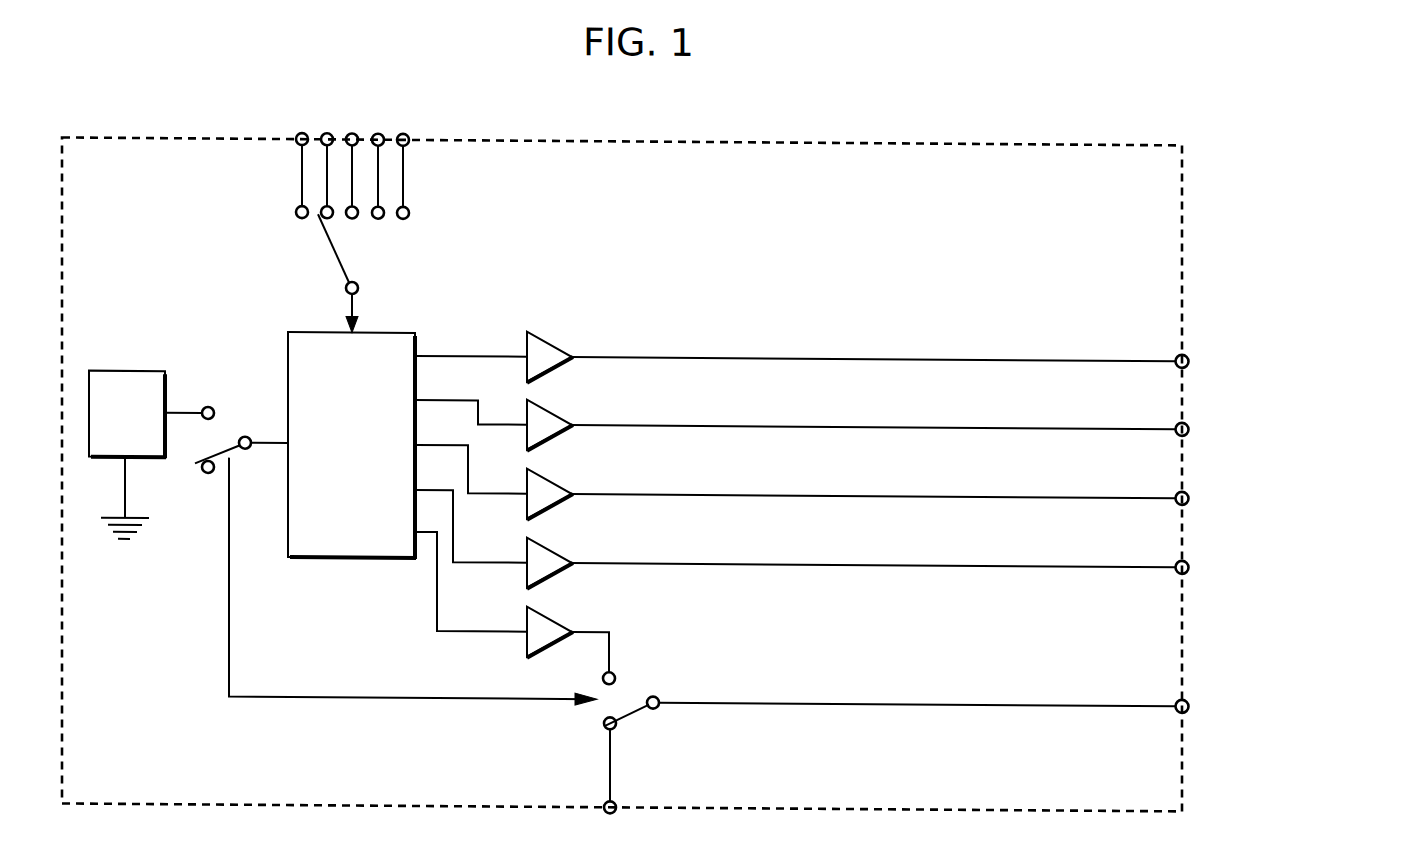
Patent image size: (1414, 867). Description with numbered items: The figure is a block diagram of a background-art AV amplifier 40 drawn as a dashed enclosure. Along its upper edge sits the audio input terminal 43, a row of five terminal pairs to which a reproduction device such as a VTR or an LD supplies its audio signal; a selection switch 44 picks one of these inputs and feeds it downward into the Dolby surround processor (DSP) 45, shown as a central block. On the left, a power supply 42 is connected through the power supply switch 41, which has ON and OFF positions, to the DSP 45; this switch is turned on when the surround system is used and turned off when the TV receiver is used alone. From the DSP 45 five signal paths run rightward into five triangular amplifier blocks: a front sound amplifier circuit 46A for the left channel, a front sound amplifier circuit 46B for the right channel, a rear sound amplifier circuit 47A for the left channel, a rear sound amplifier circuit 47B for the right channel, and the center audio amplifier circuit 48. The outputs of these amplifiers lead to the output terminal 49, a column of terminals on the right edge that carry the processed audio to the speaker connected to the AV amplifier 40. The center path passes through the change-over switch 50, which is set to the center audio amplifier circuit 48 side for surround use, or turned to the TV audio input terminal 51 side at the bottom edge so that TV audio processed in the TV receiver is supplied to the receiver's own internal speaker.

The AV amplifier 40 is at (1033, 135).
The power supply switch 41 is at (224, 420).
The power supply 42 is at (128, 368).
The audio input terminal 43 is at (410, 124).
The selection switch 44 is at (345, 250).
The Dolby surround processor (DSP) 45 is at (357, 558).
The front sound amplifier circuit (Lch.) 46A is at (550, 334).
The front sound amplifier circuit (Rch.) 46B is at (550, 403).
The rear sound amplifier circuit (Lch.) 47A is at (550, 473).
The rear sound amplifier circuit (Rch.) 47B is at (550, 540).
The center audio amplifier circuit 48 is at (550, 609).
The output terminal 49 is at (1194, 358).
The change-over switch 50 is at (630, 711).
The TV audio input terminal 51 is at (615, 808).